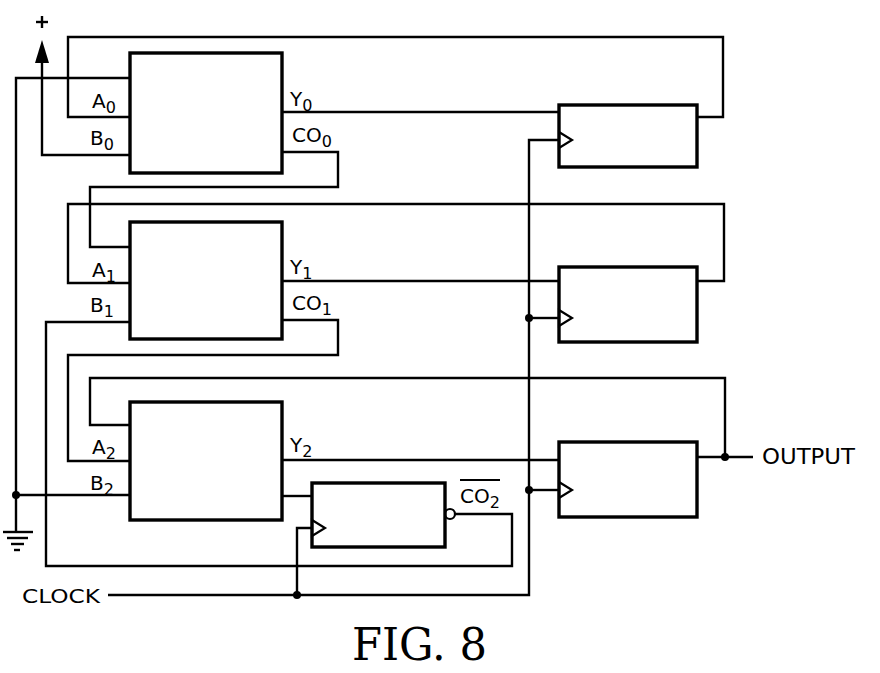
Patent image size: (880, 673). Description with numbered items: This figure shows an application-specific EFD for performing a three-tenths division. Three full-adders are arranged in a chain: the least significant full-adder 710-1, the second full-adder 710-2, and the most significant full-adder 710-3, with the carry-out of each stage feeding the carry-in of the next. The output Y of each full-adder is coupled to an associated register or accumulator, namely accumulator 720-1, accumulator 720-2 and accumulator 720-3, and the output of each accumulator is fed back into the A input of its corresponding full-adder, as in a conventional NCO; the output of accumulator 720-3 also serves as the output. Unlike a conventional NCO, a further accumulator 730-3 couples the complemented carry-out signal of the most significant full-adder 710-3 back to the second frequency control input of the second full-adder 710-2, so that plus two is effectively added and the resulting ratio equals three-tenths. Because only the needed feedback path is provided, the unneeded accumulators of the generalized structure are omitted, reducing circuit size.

The least significant full-adder 710-1 is at (265, 90).
The second full-adder 710-2 is at (269, 258).
The most significant full-adder 710-3 is at (270, 436).
The first accumulator 720-1 is at (660, 148).
The second accumulator 720-2 is at (660, 316).
The third accumulator 720-3 is at (660, 490).
The carry-out feedback accumulator 730-3 is at (416, 525).